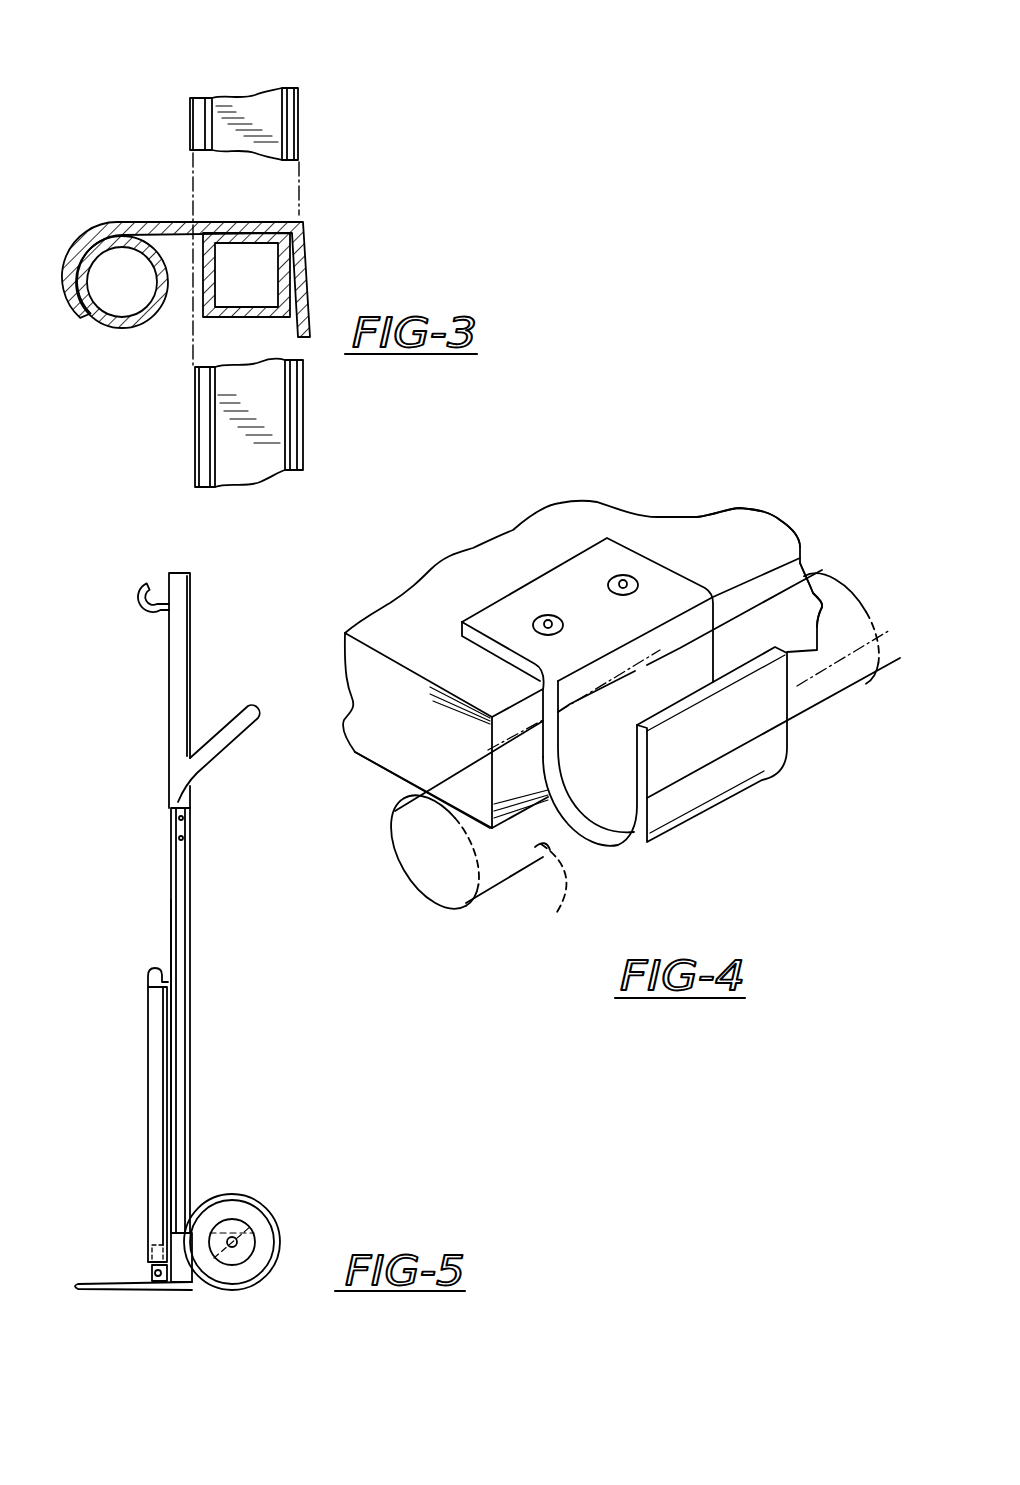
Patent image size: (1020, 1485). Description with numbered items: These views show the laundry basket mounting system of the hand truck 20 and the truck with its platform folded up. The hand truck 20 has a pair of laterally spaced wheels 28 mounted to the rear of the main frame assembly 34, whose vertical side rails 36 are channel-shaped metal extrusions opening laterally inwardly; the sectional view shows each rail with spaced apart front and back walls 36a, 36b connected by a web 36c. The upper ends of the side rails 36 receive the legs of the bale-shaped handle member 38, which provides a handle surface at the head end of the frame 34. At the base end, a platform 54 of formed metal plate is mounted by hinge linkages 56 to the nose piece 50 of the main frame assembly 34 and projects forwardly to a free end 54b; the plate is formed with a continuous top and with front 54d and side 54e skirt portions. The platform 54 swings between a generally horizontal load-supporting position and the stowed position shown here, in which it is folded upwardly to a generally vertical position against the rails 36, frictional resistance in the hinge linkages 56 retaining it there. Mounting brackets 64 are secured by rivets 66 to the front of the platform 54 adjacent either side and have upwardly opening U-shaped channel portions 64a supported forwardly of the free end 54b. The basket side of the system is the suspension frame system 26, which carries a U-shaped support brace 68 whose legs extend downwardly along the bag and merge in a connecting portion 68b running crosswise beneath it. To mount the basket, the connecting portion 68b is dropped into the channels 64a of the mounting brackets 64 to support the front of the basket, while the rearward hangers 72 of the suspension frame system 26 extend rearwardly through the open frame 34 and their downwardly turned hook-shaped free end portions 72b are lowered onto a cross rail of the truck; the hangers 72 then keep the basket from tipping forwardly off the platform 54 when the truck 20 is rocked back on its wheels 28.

In FIG. 5, the hand truck 20 is at (163, 788).
In FIG. 3, the suspension frame system 26 is at (118, 330).
In FIG. 5, the wheels 28 is at (272, 1212).
In FIG. 5, the main frame assembly 34 is at (205, 973).
In FIG. 3, the vertical side rails 36 is at (248, 89).
In FIG. 3, the front wall 36a is at (190, 137).
In FIG. 3, the back wall 36b is at (300, 143).
In FIG. 3, the web 36c is at (270, 104).
In FIG. 5, the handle member 38 is at (251, 704).
In FIG. 5, the nose piece 50 is at (136, 1296).
In FIG. 4, the platform 54 is at (386, 601).
In FIG. 5, the platform 54 is at (144, 1096).
In FIG. 4, the free end 54b is at (697, 517).
In FIG. 4, the front skirt portion 54d is at (810, 610).
In FIG. 4, the side skirt portion 54e is at (352, 712).
In FIG. 5, the hinge linkages 56 is at (190, 1296).
In FIG. 4, the mounting brackets 64 is at (624, 672).
In FIG. 4, the U-shaped channel portion 64a is at (598, 833).
In FIG. 4, the rivets 66 is at (538, 620).
In FIG. 4, the U-shaped support brace 68 is at (501, 884).
In FIG. 4, the connecting portion 68b is at (576, 891).
In FIG. 3, the hangers 72 is at (86, 221).
In FIG. 3, the hook-shaped free end portion 72b is at (303, 258).